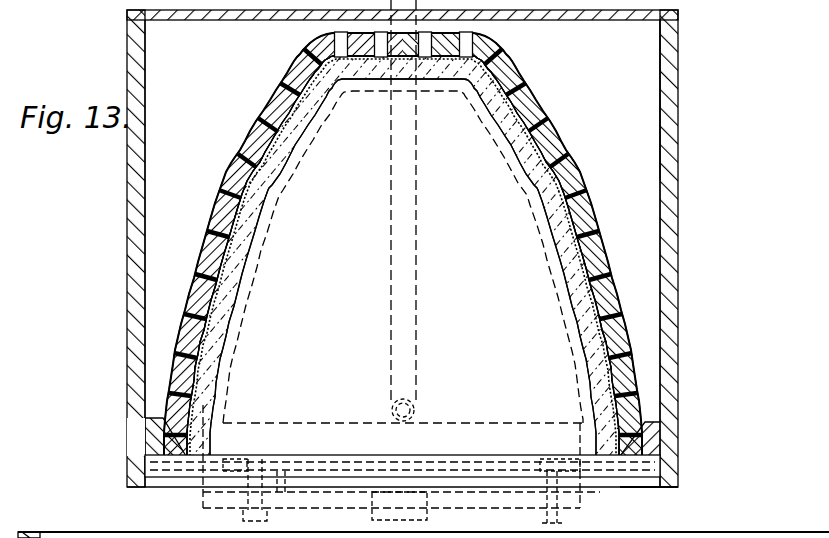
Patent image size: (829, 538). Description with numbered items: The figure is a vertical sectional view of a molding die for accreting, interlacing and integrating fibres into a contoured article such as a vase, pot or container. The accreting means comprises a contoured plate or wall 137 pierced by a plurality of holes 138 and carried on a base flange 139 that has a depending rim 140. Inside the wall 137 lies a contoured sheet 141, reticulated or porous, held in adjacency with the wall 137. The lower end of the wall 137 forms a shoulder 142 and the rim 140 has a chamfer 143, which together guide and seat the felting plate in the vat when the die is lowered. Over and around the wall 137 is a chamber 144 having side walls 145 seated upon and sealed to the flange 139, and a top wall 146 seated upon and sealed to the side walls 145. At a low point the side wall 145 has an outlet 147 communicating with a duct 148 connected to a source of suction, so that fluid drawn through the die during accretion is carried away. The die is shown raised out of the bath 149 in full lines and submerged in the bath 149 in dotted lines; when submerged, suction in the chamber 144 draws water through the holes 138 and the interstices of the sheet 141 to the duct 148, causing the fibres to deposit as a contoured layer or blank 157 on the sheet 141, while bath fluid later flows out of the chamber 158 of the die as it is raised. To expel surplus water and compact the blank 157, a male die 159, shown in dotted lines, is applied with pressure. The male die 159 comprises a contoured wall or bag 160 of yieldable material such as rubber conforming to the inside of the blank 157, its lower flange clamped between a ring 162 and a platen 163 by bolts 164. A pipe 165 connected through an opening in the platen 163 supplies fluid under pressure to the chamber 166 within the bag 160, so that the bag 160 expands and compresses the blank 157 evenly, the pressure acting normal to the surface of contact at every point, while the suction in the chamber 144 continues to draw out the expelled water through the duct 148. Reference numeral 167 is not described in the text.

The contoured plate or wall 137 is at (598, 242).
The holes or apertures 138 is at (614, 264).
The base flange 139 is at (737, 451).
The depending rim 140 is at (737, 473).
The contoured sheet 141 is at (603, 311).
The shoulder 142 is at (640, 509).
The chamfer 143 is at (680, 527).
The chamber 144 is at (645, 135).
The side walls 145 is at (730, 165).
The top wall 146 is at (621, 21).
The outlet 147 is at (470, 399).
The duct or pipe 148 is at (477, 251).
The bath 149 is at (70, 522).
The accreted blank or carcass 157 is at (608, 339).
The chamber 158 is at (335, 341).
The male die 159 is at (583, 390).
The contoured wall 160 is at (580, 403).
The ring 162 is at (322, 451).
The platen 163 is at (203, 501).
The bolts 164 is at (247, 505).
The duct or pipe 165 is at (505, 532).
The chamber 166 is at (234, 163).
The support leg 167 is at (327, 531).